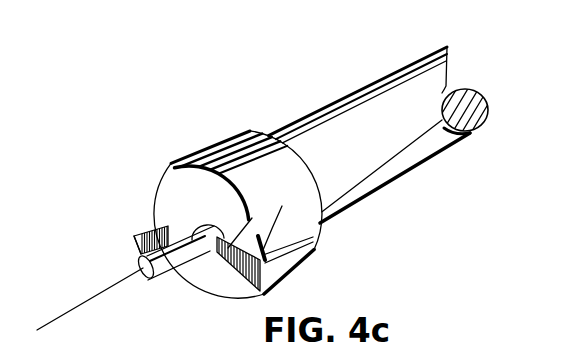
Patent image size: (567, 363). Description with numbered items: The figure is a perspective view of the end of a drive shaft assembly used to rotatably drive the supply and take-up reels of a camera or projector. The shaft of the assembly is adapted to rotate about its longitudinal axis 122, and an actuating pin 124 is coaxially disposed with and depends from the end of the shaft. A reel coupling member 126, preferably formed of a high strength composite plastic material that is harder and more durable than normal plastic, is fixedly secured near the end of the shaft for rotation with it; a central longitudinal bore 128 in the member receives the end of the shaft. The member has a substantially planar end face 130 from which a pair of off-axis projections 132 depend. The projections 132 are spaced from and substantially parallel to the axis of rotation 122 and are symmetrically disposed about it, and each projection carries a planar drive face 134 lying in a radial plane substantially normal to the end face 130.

The longitudinal axis 122 is at (85, 298).
The actuating pin 124 is at (147, 278).
The reel coupling member 126 is at (312, 252).
The central longitudinal bore 128 is at (210, 203).
The end face 130 is at (215, 278).
The off-axis projections 132 is at (137, 247).
The drive face 134 is at (145, 233).